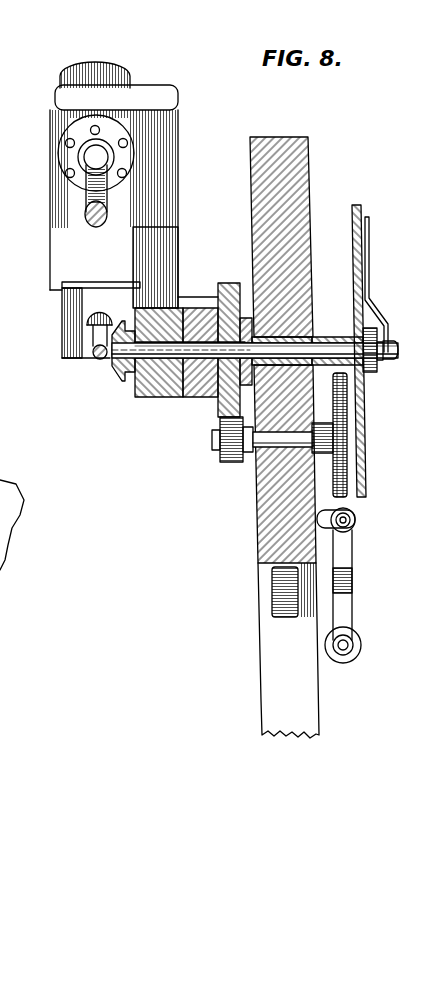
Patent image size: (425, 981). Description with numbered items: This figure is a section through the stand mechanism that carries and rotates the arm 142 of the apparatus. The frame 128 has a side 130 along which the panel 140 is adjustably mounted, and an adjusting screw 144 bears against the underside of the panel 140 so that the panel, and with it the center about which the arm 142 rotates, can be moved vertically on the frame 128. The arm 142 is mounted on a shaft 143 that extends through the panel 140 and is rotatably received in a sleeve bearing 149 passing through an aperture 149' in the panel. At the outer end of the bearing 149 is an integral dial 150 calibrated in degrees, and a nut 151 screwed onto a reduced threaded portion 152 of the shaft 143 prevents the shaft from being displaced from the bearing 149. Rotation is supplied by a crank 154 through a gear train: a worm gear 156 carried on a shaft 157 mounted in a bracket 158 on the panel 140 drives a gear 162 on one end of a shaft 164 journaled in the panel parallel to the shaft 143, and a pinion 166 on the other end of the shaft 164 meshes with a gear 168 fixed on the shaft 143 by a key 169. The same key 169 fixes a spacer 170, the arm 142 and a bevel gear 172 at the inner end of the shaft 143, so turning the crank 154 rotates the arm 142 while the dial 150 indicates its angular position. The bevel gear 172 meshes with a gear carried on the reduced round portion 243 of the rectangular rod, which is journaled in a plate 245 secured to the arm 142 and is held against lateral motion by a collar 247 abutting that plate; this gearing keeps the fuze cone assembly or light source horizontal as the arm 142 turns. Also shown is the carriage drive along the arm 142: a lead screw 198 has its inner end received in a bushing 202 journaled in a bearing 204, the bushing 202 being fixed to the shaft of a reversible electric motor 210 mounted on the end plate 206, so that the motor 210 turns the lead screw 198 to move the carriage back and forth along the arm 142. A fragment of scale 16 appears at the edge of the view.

The frame portion 16 is at (12, 525).
The frame 128 is at (258, 669).
The side 130 is at (268, 690).
The panel 140 is at (310, 162).
The rotating arm 142 is at (178, 240).
The shaft 143 is at (162, 362).
The adjusting screw 144 is at (290, 618).
The sleeve bearing 149 is at (337, 341).
The aperture 149' is at (282, 341).
The dial 150 is at (361, 210).
The nut 151 is at (370, 373).
The reduced threaded portion 152 is at (386, 362).
The crank 154 is at (353, 585).
The worm gear 156 is at (355, 520).
The shaft 157 is at (351, 526).
The bracket 158 is at (318, 518).
The gear 162 is at (350, 493).
The shaft 164 is at (288, 447).
The pinion 166 is at (228, 456).
The gear 168 is at (230, 400).
The key 169 is at (158, 342).
The spacer 170 is at (190, 313).
The bevel gear 172 is at (117, 373).
The lead screw 198 is at (90, 205).
The bushing 202 is at (108, 190).
The bearing 204 is at (113, 150).
The end plate 206 is at (148, 85).
The reversible electric motor 210 is at (97, 62).
The reduced round portion 243 is at (98, 343).
The plate 245 is at (63, 302).
The collar 247 is at (102, 308).